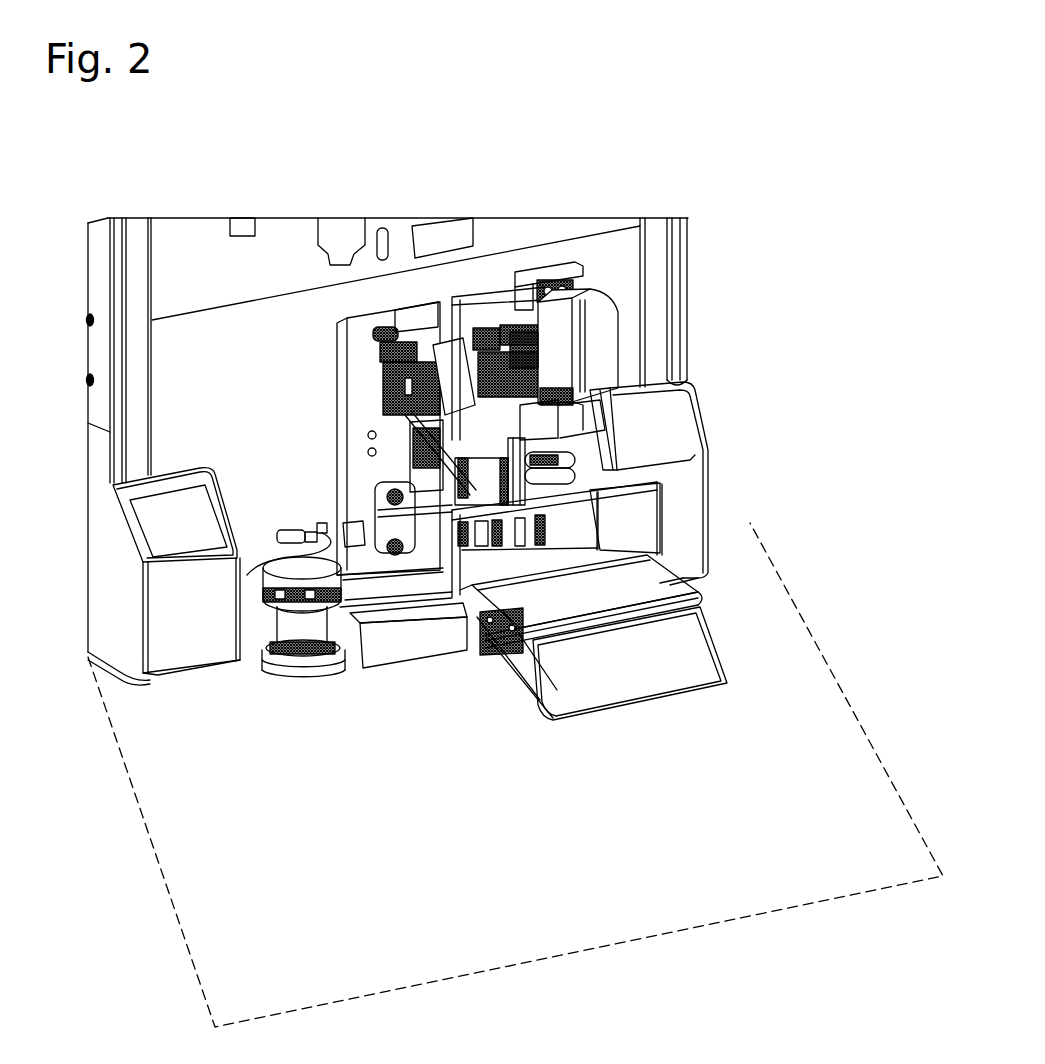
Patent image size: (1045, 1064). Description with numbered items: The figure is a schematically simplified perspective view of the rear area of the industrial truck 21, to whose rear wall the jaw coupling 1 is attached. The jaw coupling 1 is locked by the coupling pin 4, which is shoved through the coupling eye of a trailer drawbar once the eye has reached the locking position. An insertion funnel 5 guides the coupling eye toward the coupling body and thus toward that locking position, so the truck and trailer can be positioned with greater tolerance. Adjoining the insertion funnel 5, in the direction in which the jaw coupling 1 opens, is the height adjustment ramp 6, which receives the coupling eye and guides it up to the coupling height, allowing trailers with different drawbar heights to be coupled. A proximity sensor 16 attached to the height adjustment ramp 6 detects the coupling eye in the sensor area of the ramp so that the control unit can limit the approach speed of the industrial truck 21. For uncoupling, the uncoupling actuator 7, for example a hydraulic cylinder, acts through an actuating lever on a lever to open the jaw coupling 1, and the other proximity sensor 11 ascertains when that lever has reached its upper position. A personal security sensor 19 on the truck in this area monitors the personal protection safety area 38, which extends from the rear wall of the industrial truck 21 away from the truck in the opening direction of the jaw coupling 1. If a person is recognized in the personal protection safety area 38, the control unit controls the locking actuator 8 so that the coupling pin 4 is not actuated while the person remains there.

The jaw coupling 1 is at (600, 432).
The coupling pin 4 is at (515, 512).
The insertion funnel 5 is at (648, 528).
The height adjustment ramp 6 is at (628, 668).
The uncoupling actuator 7 is at (612, 343).
The locking actuator 8 is at (375, 398).
The proximity sensor 11 is at (600, 360).
The proximity sensor 16 is at (497, 650).
The personal security sensor 19 is at (295, 612).
The industrial truck 21 is at (655, 246).
The personal protection safety area 38 is at (790, 831).